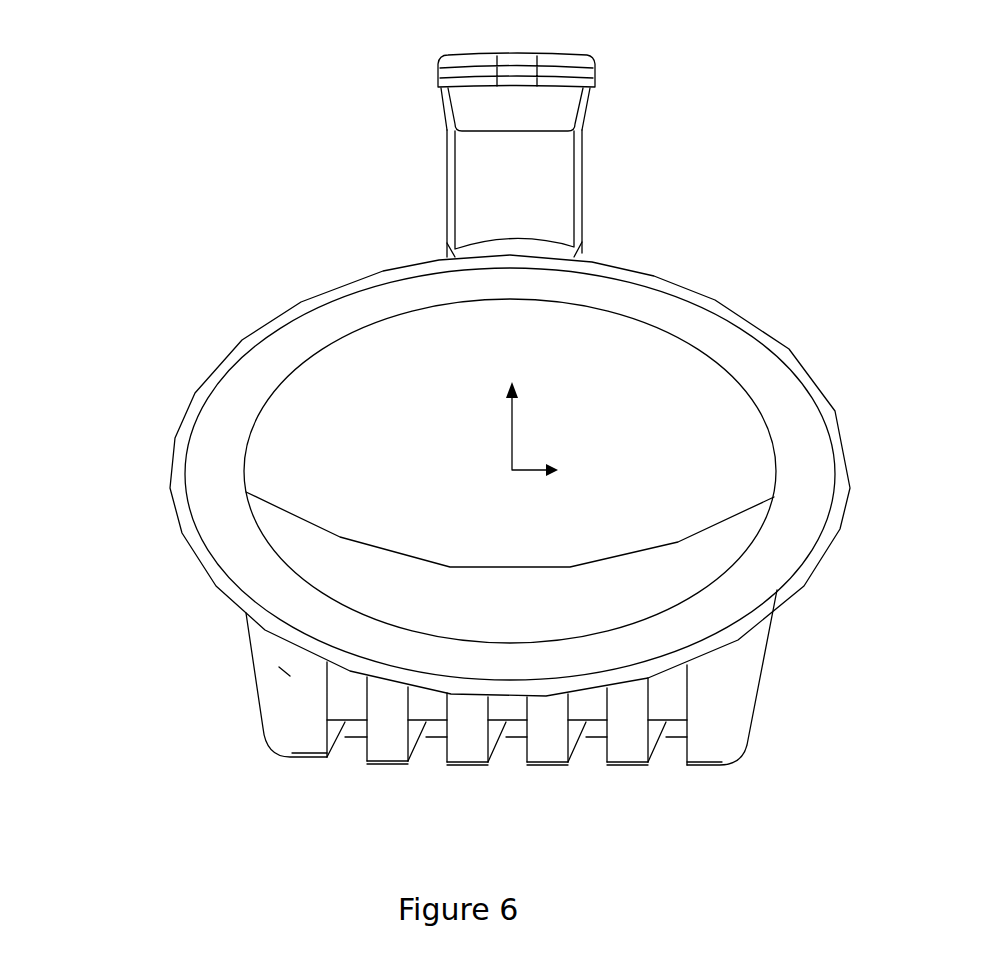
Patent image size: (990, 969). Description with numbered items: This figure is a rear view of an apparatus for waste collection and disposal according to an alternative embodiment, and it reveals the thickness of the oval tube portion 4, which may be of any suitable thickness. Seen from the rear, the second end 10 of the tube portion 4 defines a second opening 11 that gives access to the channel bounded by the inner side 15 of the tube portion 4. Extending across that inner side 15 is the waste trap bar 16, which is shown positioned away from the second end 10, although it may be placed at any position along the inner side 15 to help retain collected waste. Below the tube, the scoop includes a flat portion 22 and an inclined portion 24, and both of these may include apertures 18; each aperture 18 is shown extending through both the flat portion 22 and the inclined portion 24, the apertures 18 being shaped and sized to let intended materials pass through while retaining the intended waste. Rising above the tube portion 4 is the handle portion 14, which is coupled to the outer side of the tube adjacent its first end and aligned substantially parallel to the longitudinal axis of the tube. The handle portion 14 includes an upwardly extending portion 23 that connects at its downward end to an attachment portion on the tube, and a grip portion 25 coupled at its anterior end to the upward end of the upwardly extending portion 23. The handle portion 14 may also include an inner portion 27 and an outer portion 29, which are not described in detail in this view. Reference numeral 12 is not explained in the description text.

The tube portion 4 is at (890, 397).
The second end 10 is at (183, 438).
The second opening 11 is at (752, 378).
The handle attachment 12 is at (460, 247).
The handle portion 14 is at (678, 130).
The inner side 15 is at (208, 507).
The waste trap bar 16 is at (332, 553).
The apertures 18 is at (357, 748).
The flat portion 22 is at (680, 728).
The upwardly extending portion 23 is at (467, 167).
The inclined portion 24 is at (273, 690).
The grip portion 25 is at (462, 100).
The inner portion 27 is at (595, 75).
The outer portion 29 is at (438, 88).